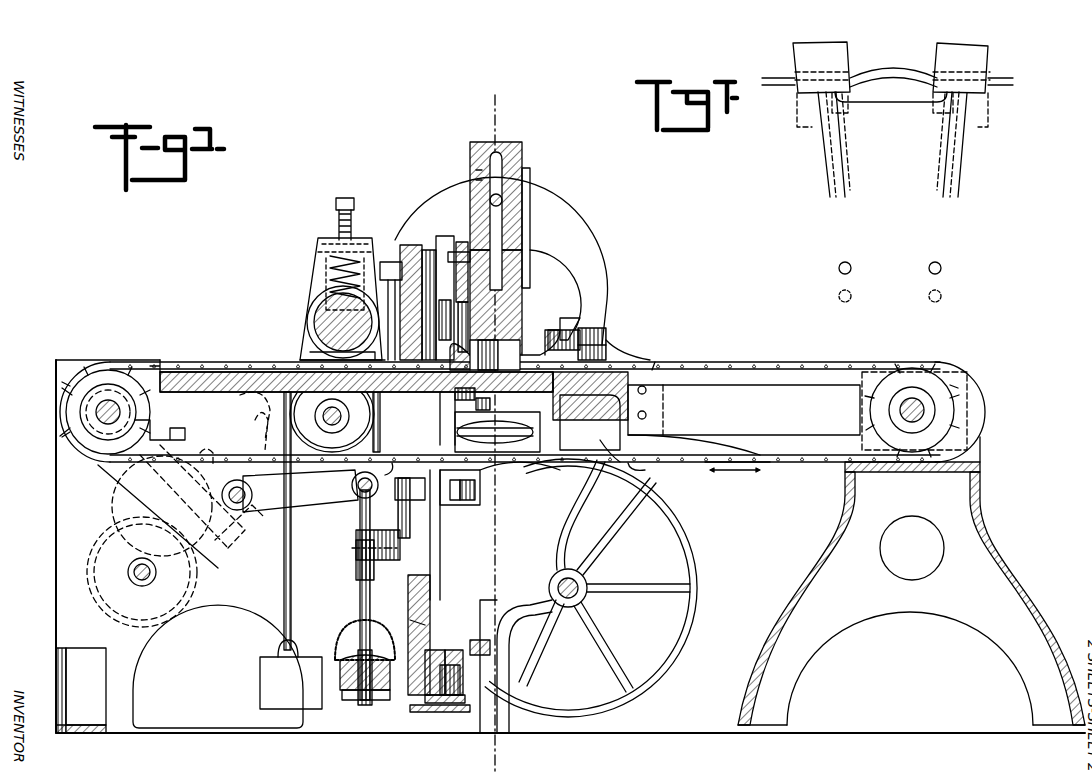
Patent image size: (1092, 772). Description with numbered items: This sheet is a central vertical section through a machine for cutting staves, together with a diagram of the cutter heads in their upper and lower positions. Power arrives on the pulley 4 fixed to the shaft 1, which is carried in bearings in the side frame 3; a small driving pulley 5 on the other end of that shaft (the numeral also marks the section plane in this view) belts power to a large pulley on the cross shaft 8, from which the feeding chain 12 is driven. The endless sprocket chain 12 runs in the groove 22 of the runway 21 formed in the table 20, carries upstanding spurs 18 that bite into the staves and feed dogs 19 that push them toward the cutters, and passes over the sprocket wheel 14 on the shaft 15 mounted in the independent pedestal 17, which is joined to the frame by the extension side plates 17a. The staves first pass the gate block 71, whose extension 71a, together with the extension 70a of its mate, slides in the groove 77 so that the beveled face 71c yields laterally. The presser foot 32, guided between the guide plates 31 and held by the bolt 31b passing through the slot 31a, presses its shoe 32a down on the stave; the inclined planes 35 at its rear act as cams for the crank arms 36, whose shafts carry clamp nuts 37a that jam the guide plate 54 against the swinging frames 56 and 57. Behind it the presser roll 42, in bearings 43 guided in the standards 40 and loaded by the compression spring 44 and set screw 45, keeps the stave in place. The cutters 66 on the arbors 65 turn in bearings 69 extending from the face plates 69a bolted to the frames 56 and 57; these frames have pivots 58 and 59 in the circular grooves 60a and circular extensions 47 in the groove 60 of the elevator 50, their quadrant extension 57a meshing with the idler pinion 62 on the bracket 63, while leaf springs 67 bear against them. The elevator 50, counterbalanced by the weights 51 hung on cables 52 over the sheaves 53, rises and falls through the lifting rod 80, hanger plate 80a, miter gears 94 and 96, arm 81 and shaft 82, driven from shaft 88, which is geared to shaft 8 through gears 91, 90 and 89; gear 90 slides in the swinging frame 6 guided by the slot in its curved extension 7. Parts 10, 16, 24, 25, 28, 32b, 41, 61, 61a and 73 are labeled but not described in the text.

In FIG. 2, the driving shaft 1 is at (578, 596).
In FIG. 2, the side frame 3 is at (586, 264).
In FIG. 2, the pulley 4 is at (674, 537).
In FIG. 2, the driving pulley 5 is at (515, 110).
In FIG. 2, the swinging frame 6 is at (181, 511).
In FIG. 2, the curved extension 7 is at (243, 432).
In FIG. 2, the cross shaft 8 is at (100, 416).
In FIG. 2, the bracket 10 is at (164, 417).
In FIG. 2, the feeding chain 12 is at (232, 372).
In FIG. 2, the sprocket wheel 14 is at (880, 397).
In FIG. 2, the shaft 15 is at (930, 410).
In FIG. 2, the chain run 16 is at (706, 464).
In FIG. 2, the pedestal 17 is at (828, 545).
In FIG. 2, the extension side plates 17a is at (762, 422).
In FIG. 2, the spurs 18 is at (200, 362).
In FIG. 2, the feed dogs 19 is at (62, 388).
In FIG. 2, the table 20 is at (250, 378).
In FIG. 2, the runway 21 is at (190, 364).
In FIG. 2, the groove 22 is at (256, 414).
In FIG. 2, the bearing 24 is at (523, 385).
In FIG. 2, the block 25 is at (628, 392).
In FIG. 2, the gear 28 is at (332, 414).
In FIG. 2, the guide plates 31 is at (530, 180).
In FIG. 2, the slot 31a is at (505, 158).
In FIG. 2, the bolt 31b is at (472, 192).
In FIG. 2, the presser foot 32 is at (520, 298).
In FIG. 2, the shoe 32a is at (557, 326).
In FIG. 2, the head base 32b is at (499, 350).
In FIG. 2, the inclined planes 35 is at (458, 300).
In FIG. 2, the crank arms 36 is at (458, 246).
In FIG. 2, the clamp nuts 37a is at (388, 266).
In FIG. 2, the standards 40 is at (322, 275).
In FIG. 2, the roller 41 is at (314, 320).
In FIG. 2, the presser roll 42 is at (312, 356).
In FIG. 2, the bearings 43 is at (310, 302).
In FIG. 2, the compression spring 44 is at (322, 250).
In FIG. 2, the adjusting set screws 45 is at (336, 207).
In FIG. 2, the circular extension 47 is at (470, 512).
In FIG. 2, the elevator 50 is at (406, 245).
In FIG. 2, the weights 51 is at (260, 676).
In FIG. 2, the cables 52 is at (289, 548).
In FIG. 2, the sheaves 53 is at (341, 418).
In FIG. 2, the guide plate 54 is at (432, 252).
In FIG. 2, the swinging frame 56 is at (445, 652).
In FIG. 2, the swinging frame 57 is at (516, 658).
In FIG. 2, the quadrant extension 57a is at (490, 668).
In FIG. 7, the pivot 58 is at (839, 268).
In FIG. 2, the pivot 59 is at (372, 540).
In FIG. 7, the pivot 59 is at (941, 268).
In FIG. 2, the circular groove 60 is at (408, 500).
In FIG. 2, the circular grooves 60a is at (408, 596).
In FIG. 2, the shaft 61 is at (376, 550).
In FIG. 2, the cam 61a is at (510, 432).
In FIG. 2, the idler pinion 62 is at (455, 698).
In FIG. 2, the bracket 63 is at (440, 712).
In FIG. 2, the arbors 65 is at (497, 428).
In FIG. 7, the arbors 65 is at (948, 153).
In FIG. 7, the cutters 66 is at (953, 54).
In FIG. 2, the leaf springs 67 is at (440, 598).
In FIG. 2, the bearings 69 is at (478, 393).
In FIG. 2, the face plate 69a is at (444, 483).
In FIG. 2, the extension 70a is at (744, 405).
In FIG. 2, the gate block 71 is at (605, 328).
In FIG. 2, the extension 71a is at (598, 445).
In FIG. 2, the beveled face 71c is at (608, 340).
In FIG. 2, the wedge 73 is at (575, 318).
In FIG. 2, the groove 77 is at (590, 422).
In FIG. 2, the lifting rod 80 is at (360, 590).
In FIG. 2, the hanger plate 80a is at (348, 694).
In FIG. 2, the arm 81 is at (310, 490).
In FIG. 2, the shaft 82 is at (244, 504).
In FIG. 2, the shaft 88 is at (134, 582).
In FIG. 2, the gear 89 is at (100, 550).
In FIG. 2, the transmission gear 90 is at (112, 497).
In FIG. 2, the gear 91 is at (112, 392).
In FIG. 2, the miter gear 94 is at (348, 628).
In FIG. 2, the miter gear 96 is at (342, 662).